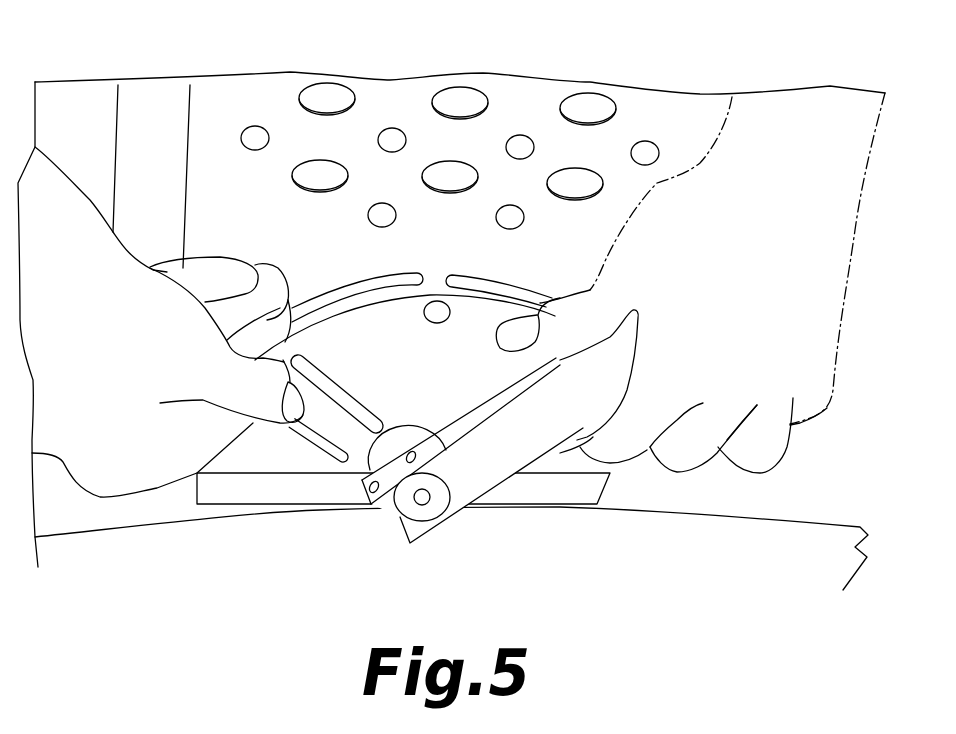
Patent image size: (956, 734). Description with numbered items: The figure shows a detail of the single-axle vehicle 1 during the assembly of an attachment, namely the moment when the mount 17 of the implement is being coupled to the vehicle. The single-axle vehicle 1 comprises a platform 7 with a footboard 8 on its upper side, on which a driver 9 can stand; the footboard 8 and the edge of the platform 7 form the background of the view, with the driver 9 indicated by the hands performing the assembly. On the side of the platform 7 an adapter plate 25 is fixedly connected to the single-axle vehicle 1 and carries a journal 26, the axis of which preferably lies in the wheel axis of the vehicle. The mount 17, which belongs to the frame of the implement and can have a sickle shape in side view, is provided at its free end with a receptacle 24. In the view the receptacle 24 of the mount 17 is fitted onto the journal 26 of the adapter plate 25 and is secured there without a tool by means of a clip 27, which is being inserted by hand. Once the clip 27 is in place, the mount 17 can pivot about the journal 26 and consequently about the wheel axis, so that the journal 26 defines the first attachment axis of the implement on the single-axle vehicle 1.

The single-axle vehicle 1 is at (535, 90).
The platform 7 is at (457, 522).
The footboard 8 is at (823, 533).
The driver 9 is at (842, 202).
The mount 17 is at (553, 437).
The receptacle 24 is at (447, 515).
The adapter plate 25 is at (373, 317).
The journal 26 is at (403, 510).
The clip 27 is at (318, 448).